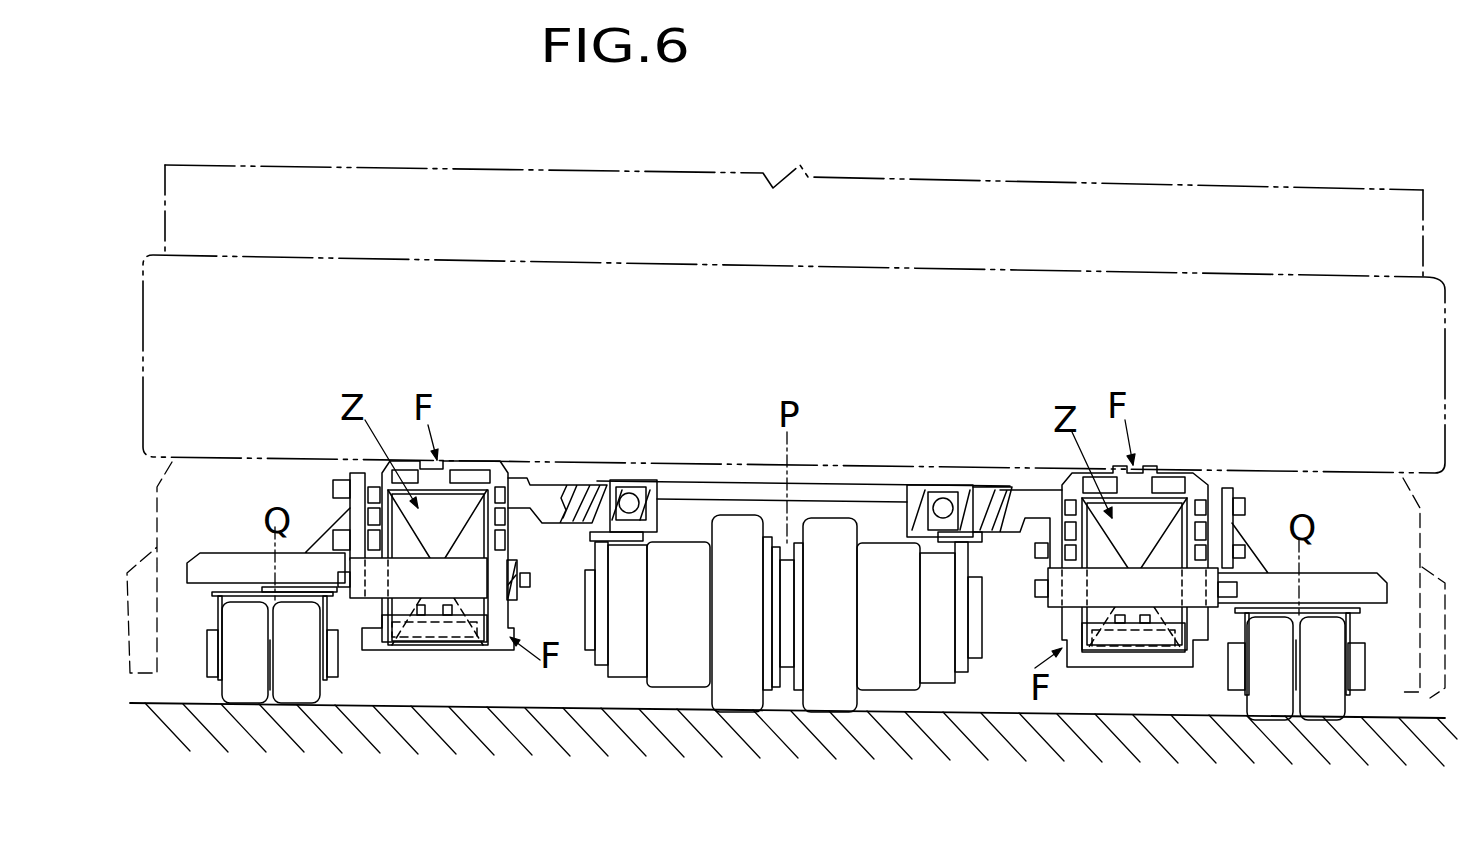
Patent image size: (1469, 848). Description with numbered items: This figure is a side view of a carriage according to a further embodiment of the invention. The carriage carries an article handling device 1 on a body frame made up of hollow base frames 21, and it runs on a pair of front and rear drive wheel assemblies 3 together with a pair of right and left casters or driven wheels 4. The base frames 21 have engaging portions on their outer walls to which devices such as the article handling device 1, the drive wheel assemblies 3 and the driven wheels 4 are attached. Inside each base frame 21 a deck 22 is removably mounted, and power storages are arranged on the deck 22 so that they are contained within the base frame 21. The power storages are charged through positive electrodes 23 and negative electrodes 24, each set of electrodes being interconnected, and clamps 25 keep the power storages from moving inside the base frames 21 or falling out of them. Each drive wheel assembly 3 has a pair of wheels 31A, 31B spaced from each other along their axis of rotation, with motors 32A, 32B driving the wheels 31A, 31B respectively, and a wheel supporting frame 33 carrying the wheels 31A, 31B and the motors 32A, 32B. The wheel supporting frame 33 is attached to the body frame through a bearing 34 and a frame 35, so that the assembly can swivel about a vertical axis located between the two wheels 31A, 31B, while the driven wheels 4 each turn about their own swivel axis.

The article handling device 1 is at (1447, 292).
The base frame 21 is at (470, 462).
The deck 22 is at (440, 642).
The positive electrode 23 is at (453, 613).
The negative electrode 24 is at (447, 617).
The clamp 25 is at (377, 580).
The drive wheel assembly 3 is at (786, 700).
The wheel 31A is at (733, 712).
The wheel 31B is at (833, 708).
The motor 32A is at (667, 673).
The motor 32B is at (897, 683).
The wheel supporting frame 33 is at (592, 660).
The bearing 34 is at (947, 478).
The frame 35 is at (992, 492).
The driven wheel 4 is at (273, 710).